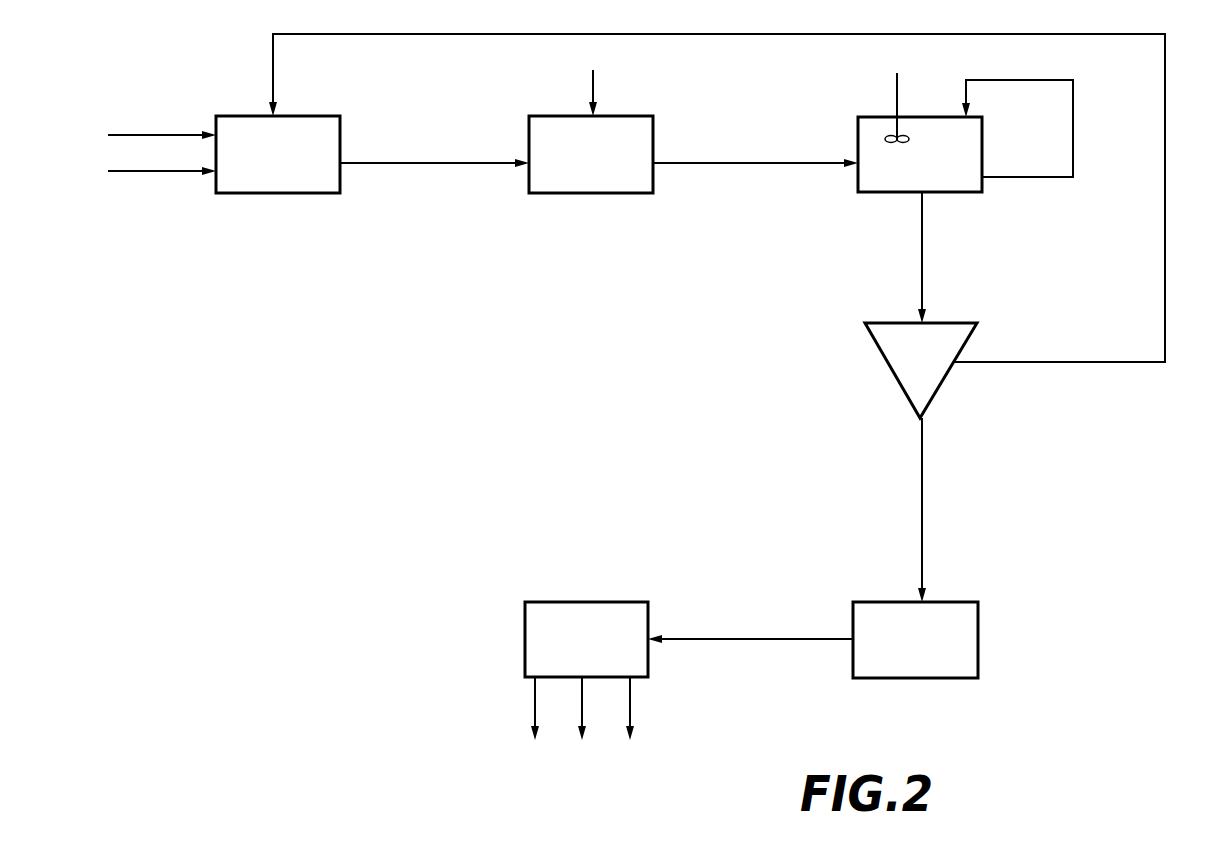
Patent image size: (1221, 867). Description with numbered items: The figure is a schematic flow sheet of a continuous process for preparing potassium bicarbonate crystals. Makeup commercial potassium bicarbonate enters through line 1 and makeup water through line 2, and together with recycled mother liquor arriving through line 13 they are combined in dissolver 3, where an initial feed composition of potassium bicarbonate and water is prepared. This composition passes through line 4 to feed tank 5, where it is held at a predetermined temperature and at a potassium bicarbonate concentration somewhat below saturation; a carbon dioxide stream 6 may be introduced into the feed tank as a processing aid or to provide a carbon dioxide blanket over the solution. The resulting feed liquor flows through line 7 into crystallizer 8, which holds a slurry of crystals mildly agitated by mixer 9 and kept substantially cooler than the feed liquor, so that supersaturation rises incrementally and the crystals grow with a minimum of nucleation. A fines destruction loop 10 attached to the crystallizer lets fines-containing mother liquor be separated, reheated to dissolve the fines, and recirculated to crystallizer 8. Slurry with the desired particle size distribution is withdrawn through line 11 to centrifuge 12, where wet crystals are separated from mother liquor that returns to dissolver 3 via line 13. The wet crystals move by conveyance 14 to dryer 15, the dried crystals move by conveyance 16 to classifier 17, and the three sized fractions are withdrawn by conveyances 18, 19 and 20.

The line 1 is at (132, 134).
The line 2 is at (136, 172).
The dissolver 3 is at (278, 154).
The line 4 is at (447, 161).
The feed tank 5 is at (591, 154).
The carbon dioxide stream 6 is at (592, 78).
The line 7 is at (742, 161).
The crystallizer 8 is at (920, 154).
The mixer 9 is at (896, 89).
The fines destruction loop 10 is at (1073, 140).
The line 11 is at (922, 262).
The centrifuge 12 is at (921, 370).
The line 13 is at (1165, 222).
The conveyance 14 is at (922, 525).
The dryer 15 is at (915, 640).
The conveyance 16 is at (761, 637).
The classifier 17 is at (586, 639).
The conveyance 18 is at (538, 726).
The conveyance 19 is at (585, 726).
The conveyance 20 is at (633, 726).